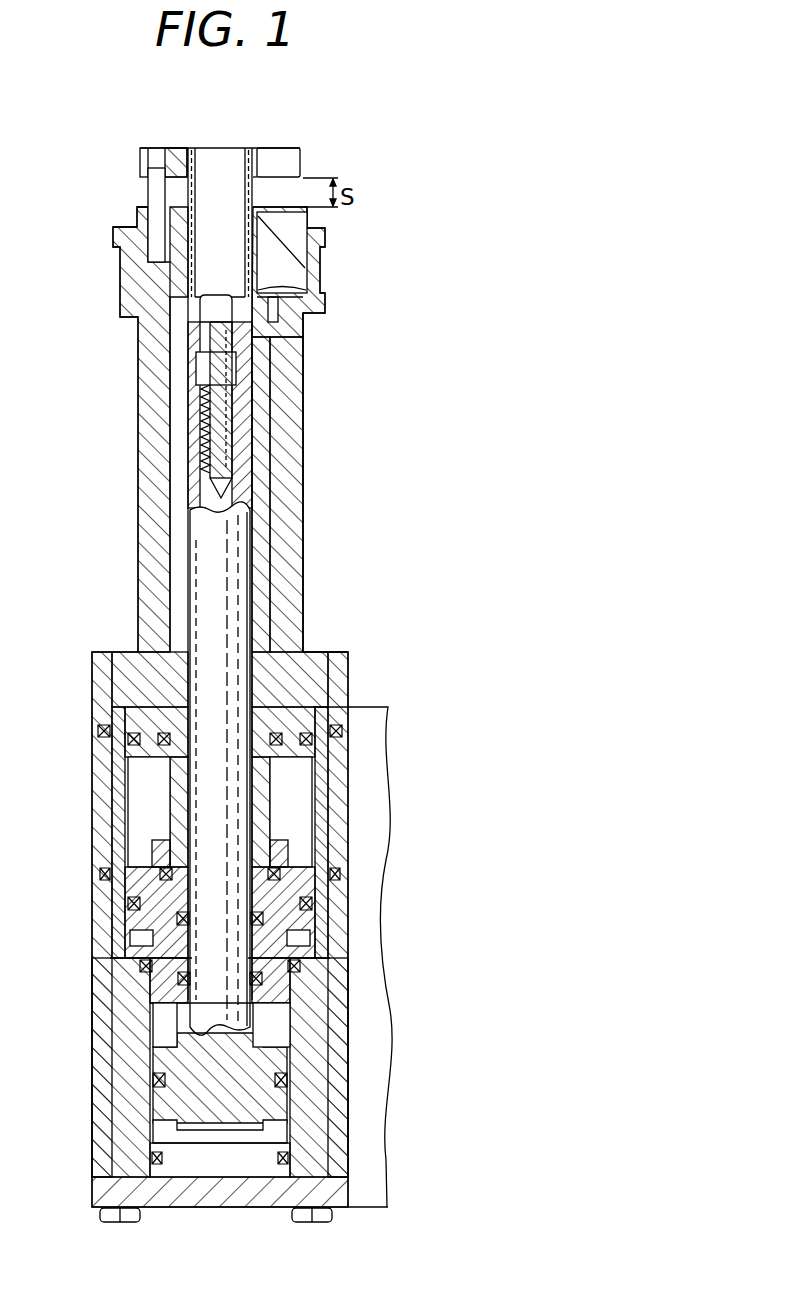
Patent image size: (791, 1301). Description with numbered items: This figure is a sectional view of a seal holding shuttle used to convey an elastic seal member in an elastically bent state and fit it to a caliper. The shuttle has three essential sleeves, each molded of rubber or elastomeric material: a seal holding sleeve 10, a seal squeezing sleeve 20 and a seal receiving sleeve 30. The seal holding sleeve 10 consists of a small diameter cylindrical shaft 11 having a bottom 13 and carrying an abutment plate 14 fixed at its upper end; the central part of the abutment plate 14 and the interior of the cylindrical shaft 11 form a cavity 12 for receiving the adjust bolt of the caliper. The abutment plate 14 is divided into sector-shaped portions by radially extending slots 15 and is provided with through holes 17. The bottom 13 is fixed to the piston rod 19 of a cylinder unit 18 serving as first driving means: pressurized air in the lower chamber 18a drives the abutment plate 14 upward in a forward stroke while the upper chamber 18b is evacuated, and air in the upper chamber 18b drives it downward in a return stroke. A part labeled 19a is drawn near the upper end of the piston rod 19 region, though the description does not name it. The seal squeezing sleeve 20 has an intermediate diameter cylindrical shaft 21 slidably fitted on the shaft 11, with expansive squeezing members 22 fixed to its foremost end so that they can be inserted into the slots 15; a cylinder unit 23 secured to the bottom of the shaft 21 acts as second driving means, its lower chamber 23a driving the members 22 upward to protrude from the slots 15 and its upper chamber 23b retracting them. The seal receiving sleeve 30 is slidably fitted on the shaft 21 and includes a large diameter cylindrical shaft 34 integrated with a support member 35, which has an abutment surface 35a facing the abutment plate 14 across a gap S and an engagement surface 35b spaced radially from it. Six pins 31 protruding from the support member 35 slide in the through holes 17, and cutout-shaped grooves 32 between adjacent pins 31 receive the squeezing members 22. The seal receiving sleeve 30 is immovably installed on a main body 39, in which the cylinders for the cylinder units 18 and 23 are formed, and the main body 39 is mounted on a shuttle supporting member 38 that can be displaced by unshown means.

The seal holding sleeve 10 is at (126, 153).
The cylindrical shaft 11 is at (285, 238).
The cavity 12 is at (220, 162).
The bottom 13 is at (257, 335).
The abutment plate 14 is at (307, 149).
The slots 15 is at (268, 158).
The through holes 17 is at (160, 148).
The cylinder unit 18 is at (280, 1024).
The lower chamber 18a is at (283, 1133).
The upper chamber 18b is at (282, 1042).
The piston rod 19 is at (240, 1000).
The seal 19a is at (273, 288).
The seal squeezing sleeve 20 is at (280, 390).
The cylindrical shaft 21 is at (263, 453).
The expansive squeezing members 22 is at (283, 257).
The cylinder unit 23 is at (295, 790).
The lower chamber 23a is at (303, 910).
The upper chamber 23b is at (298, 815).
The seal receiving sleeve 30 is at (316, 530).
The pins 31 is at (153, 190).
The cutout-shaped grooves 32 is at (313, 297).
The cylindrical shaft 34 is at (293, 493).
The support member 35 is at (130, 290).
The abutment surface 35a is at (140, 208).
The engagement surface 35b is at (118, 224).
The shuttle supporting member 38 is at (363, 725).
The main body 39 is at (100, 1022).